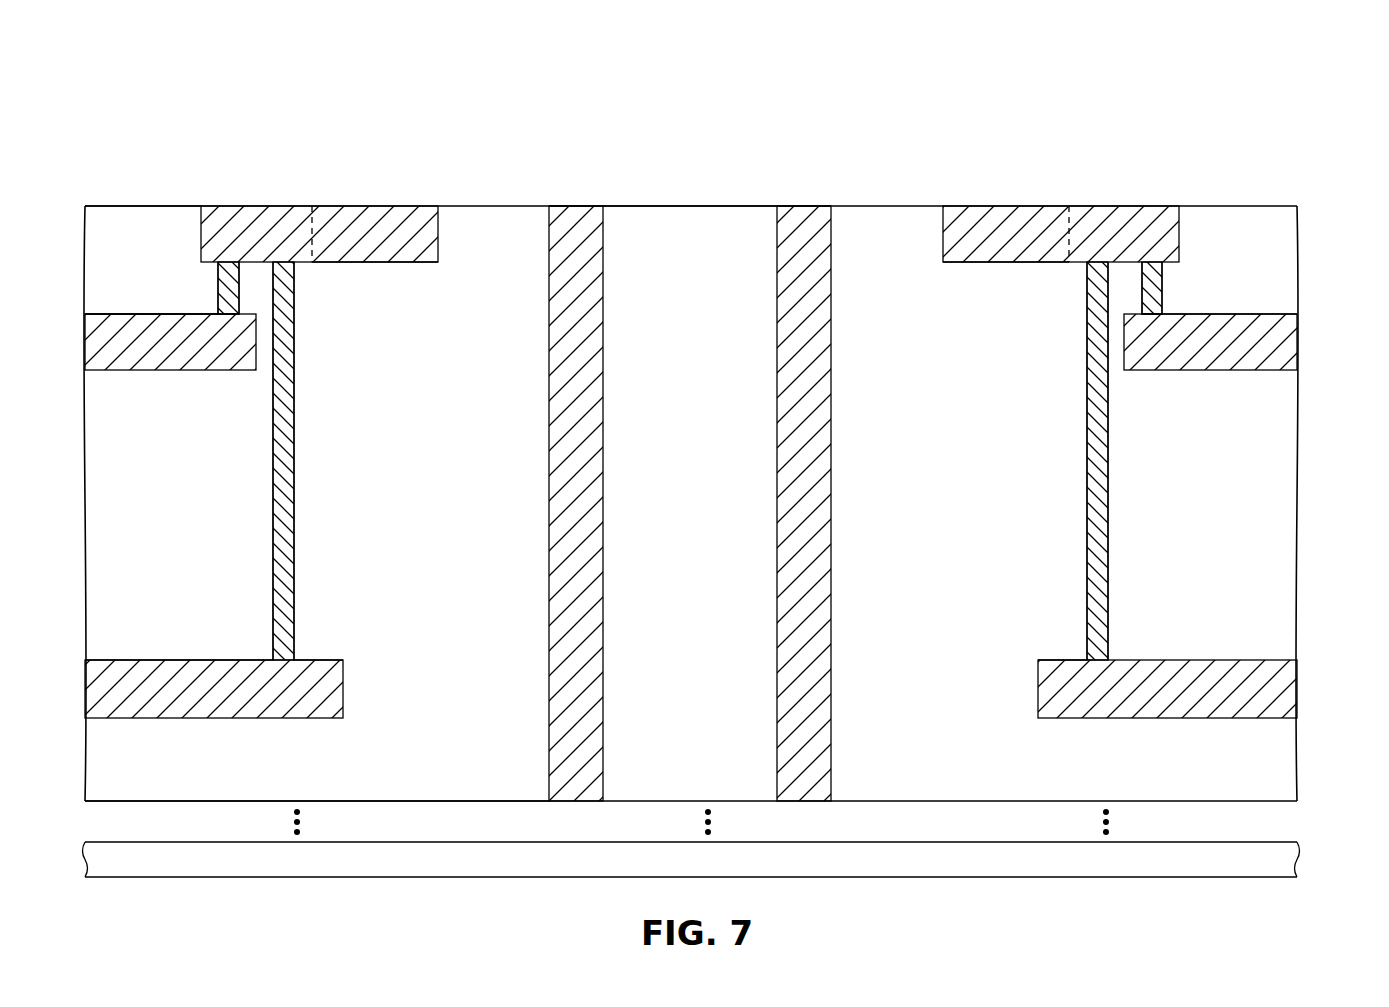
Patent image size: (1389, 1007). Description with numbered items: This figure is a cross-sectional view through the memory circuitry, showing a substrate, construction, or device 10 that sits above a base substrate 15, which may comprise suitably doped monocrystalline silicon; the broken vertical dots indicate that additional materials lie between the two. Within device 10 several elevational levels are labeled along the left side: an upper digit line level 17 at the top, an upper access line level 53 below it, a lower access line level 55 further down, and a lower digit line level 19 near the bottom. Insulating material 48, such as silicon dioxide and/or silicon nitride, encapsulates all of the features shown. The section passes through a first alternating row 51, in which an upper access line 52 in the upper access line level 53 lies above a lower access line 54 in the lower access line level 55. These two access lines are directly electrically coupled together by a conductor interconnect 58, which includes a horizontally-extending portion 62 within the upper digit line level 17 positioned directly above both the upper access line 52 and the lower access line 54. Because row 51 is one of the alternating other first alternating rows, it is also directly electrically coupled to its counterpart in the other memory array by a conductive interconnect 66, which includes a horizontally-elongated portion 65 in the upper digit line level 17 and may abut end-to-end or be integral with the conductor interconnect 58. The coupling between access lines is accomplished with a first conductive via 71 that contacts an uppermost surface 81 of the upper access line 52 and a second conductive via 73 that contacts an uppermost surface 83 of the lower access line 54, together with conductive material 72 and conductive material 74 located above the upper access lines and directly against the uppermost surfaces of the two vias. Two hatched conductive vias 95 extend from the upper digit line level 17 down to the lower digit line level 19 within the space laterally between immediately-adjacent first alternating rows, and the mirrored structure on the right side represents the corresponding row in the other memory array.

The substrate, construction, or device 10 is at (1285, 108).
The base substrate 15 is at (1217, 869).
The upper digit line level 17 is at (72, 240).
The lower digit line level 19 is at (72, 773).
The insulating material 48 is at (112, 250).
The first alternating row 51 is at (738, 150).
The upper access line 52 is at (150, 373).
The upper access line level 53 is at (72, 345).
The lower access line 54 is at (157, 658).
The lower access line level 55 is at (72, 689).
The conductor interconnect 58 is at (199, 232).
The horizontally-extending portion 62 is at (312, 198).
The horizontally-elongated portion 65 is at (312, 268).
The conductive interconnect 66 is at (350, 207).
The first conductive via 71 is at (217, 300).
The conductive material 72 is at (234, 306).
The second conductive via 73 is at (295, 497).
The conductive material 74 is at (296, 537).
The uppermost surface 81 is at (118, 313).
The uppermost surface 83 is at (322, 659).
The conductive via 95 is at (603, 372).